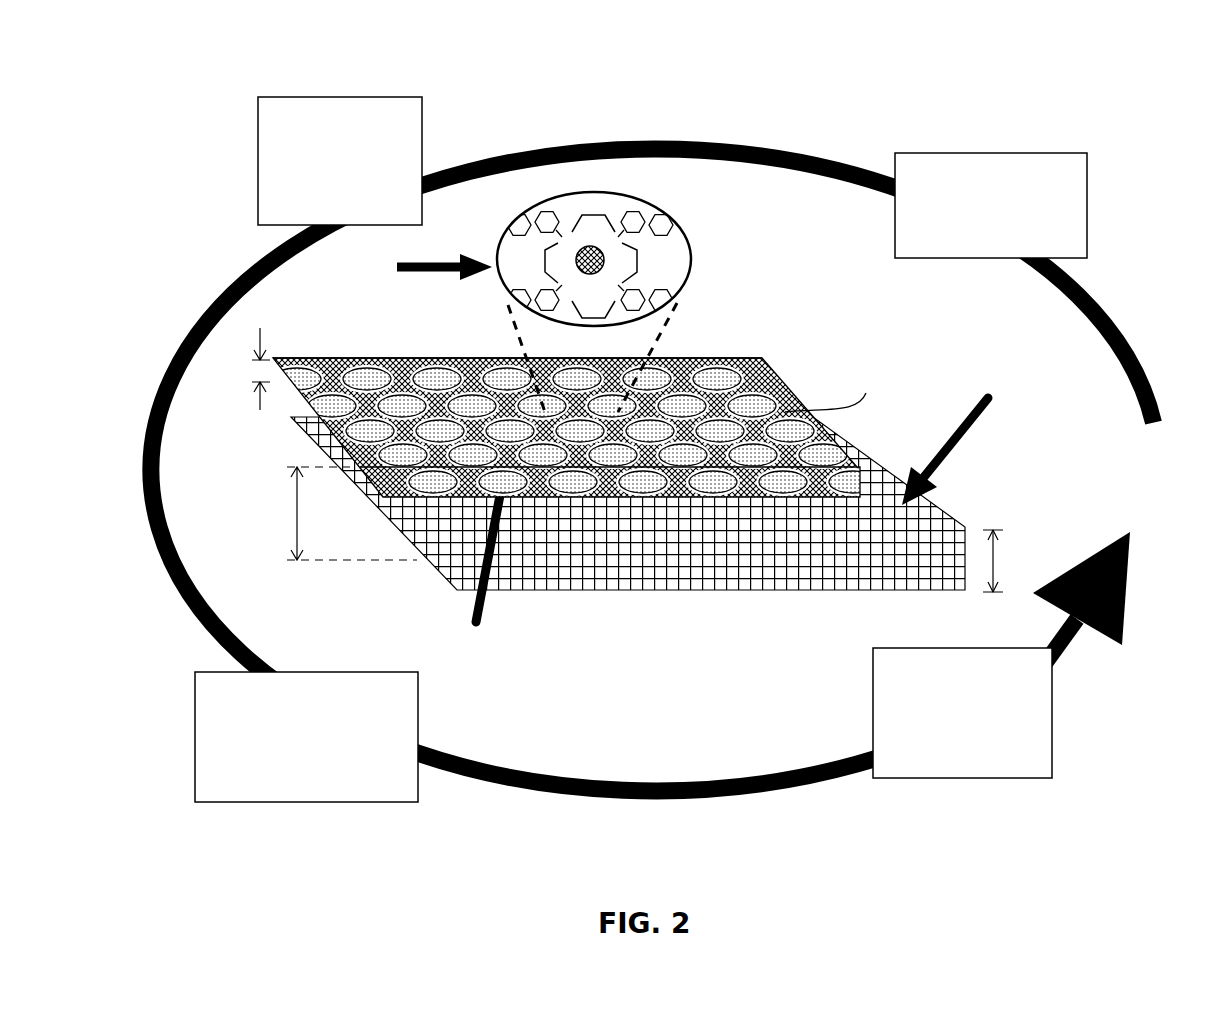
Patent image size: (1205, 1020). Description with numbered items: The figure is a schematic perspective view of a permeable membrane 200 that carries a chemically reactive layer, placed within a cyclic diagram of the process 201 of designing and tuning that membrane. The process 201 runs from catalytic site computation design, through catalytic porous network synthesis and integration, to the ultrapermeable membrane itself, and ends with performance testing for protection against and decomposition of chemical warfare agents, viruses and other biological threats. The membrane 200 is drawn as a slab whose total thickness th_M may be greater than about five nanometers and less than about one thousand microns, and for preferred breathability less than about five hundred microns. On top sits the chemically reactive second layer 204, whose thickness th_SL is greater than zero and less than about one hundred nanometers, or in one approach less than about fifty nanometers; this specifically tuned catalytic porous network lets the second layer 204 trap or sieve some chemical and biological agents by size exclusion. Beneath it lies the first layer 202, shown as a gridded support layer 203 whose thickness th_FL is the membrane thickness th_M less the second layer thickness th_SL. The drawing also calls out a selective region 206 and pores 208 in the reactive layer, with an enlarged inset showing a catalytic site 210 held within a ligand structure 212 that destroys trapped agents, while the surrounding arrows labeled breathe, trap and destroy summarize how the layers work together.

The membrane 200 is at (798, 331).
The process 201 is at (182, 44).
The first layer 202 is at (932, 505).
The fibrous layer 203 is at (742, 574).
The second layer 204 is at (385, 358).
The selective layer 206 is at (766, 363).
The pore with catalytic site 208 is at (612, 208).
The metal center 210 is at (603, 262).
The ligand 212 is at (650, 251).